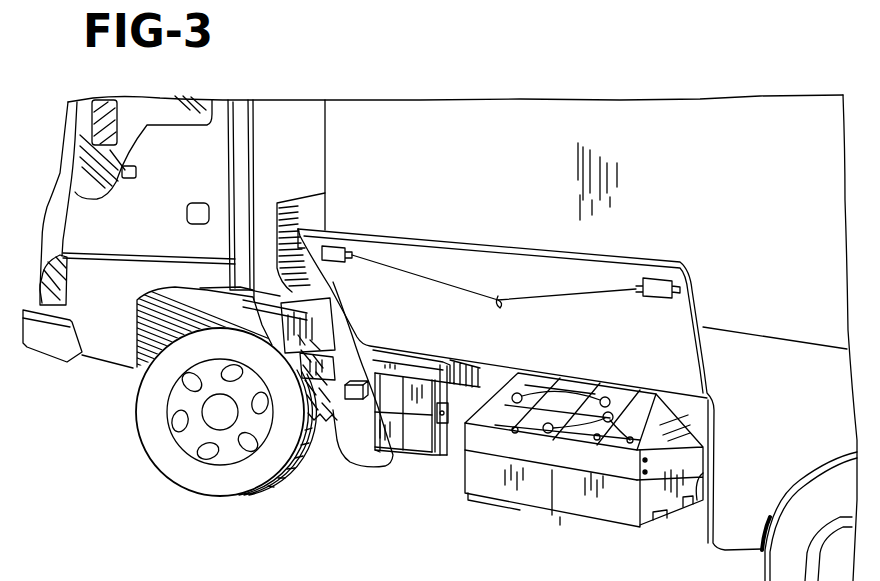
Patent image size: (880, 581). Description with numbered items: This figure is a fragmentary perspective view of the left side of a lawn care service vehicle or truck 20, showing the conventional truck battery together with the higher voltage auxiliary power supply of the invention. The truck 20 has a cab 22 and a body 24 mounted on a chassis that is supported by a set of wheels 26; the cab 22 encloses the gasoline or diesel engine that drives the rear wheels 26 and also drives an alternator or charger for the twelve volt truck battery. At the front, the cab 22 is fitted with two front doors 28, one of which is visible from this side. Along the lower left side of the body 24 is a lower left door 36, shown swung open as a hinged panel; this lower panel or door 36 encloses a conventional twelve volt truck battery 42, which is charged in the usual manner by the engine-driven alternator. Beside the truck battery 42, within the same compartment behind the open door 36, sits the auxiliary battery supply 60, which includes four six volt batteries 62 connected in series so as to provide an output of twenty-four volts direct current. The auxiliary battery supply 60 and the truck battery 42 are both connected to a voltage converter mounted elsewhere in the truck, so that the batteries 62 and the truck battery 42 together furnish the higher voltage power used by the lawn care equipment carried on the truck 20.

The truck 20 is at (411, 87).
The cab 22 is at (262, 130).
The body 24 is at (588, 110).
The wheels 26 is at (157, 448).
The front doors 28 is at (164, 228).
The lower left door 36 is at (488, 255).
The truck battery 42 is at (417, 443).
The auxiliary battery supply 60 is at (579, 521).
The batteries 62 is at (640, 410).